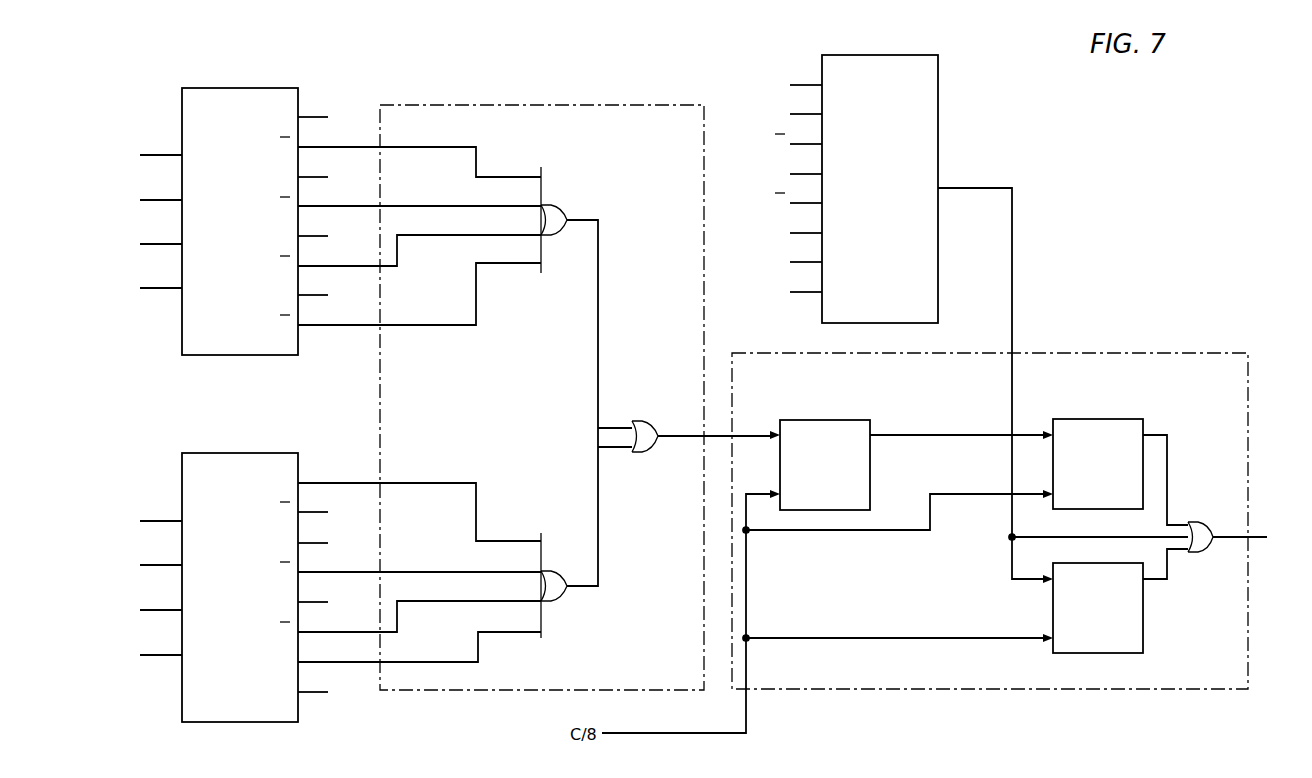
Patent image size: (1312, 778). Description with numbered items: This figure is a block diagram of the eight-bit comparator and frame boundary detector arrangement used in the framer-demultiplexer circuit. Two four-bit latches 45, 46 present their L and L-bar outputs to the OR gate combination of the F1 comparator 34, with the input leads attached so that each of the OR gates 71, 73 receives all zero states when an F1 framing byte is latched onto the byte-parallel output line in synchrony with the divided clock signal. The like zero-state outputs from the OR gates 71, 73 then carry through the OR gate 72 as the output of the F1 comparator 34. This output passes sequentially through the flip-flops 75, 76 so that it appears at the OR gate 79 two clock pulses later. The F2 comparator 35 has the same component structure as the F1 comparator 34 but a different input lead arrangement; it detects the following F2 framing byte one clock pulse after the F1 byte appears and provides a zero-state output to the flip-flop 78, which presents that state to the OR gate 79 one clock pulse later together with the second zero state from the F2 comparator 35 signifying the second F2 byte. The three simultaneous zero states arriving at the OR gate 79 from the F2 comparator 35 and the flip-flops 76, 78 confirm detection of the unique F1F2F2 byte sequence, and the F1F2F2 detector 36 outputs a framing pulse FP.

The F1 comparator 34 is at (501, 380).
The F2 comparator 35 is at (874, 55).
The F1F2F2 detector 36 is at (1011, 503).
The 4-bit latch 45 is at (234, 88).
The 4-bit latch 46 is at (234, 453).
The OR gate 71 is at (557, 205).
The OR gate 72 is at (645, 421).
The OR gate 73 is at (557, 571).
The flip-flop 75 is at (834, 420).
The flip-flop 76 is at (1107, 419).
The flip-flop 78 is at (1099, 563).
The OR gate 79 is at (1199, 523).